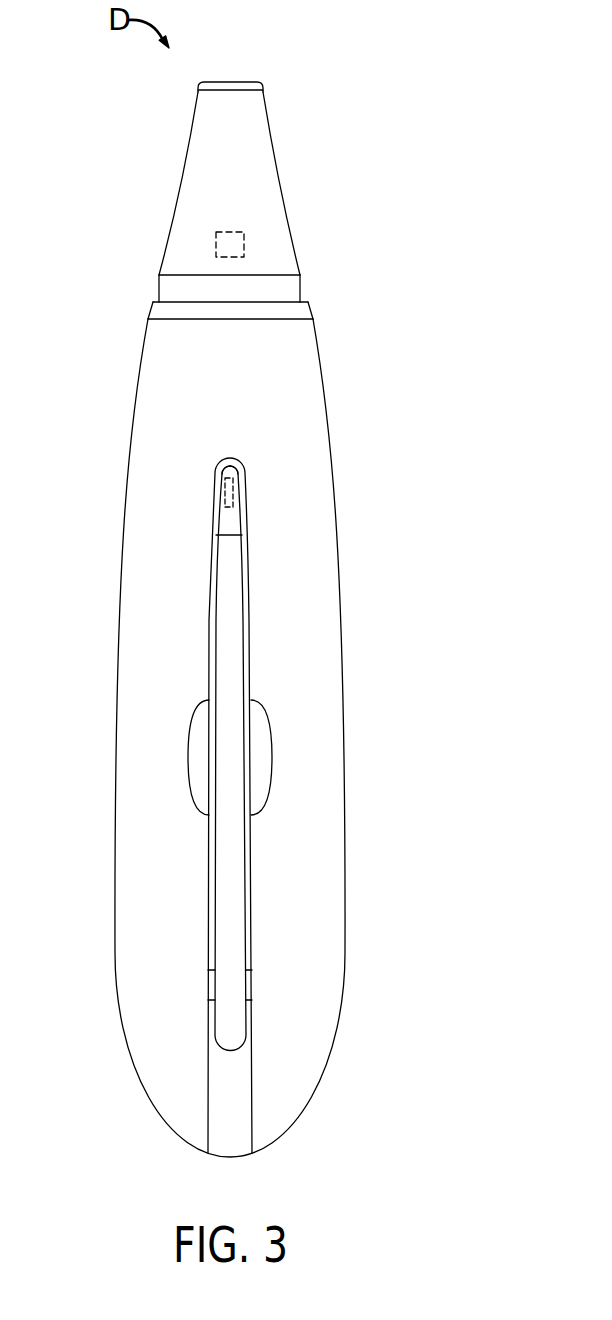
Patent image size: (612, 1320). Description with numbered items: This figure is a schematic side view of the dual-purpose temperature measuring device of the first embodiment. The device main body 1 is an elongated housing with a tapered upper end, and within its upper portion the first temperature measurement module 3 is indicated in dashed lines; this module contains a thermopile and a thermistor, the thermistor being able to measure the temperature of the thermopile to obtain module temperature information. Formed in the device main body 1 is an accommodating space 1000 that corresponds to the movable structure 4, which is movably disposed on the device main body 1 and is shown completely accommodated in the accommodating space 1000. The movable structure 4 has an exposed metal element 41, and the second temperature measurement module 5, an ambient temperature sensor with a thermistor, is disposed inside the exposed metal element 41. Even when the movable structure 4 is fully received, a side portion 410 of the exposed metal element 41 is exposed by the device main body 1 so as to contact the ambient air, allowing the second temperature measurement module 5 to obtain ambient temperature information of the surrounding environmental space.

The device main body 1 is at (138, 415).
The first temperature measurement module 3 is at (243, 246).
The movable structure 4 is at (238, 657).
The exposed metal element 41 is at (228, 526).
The side portion 410 is at (233, 516).
The second temperature measurement module 5 is at (230, 493).
The accommodating space 1000 is at (212, 862).